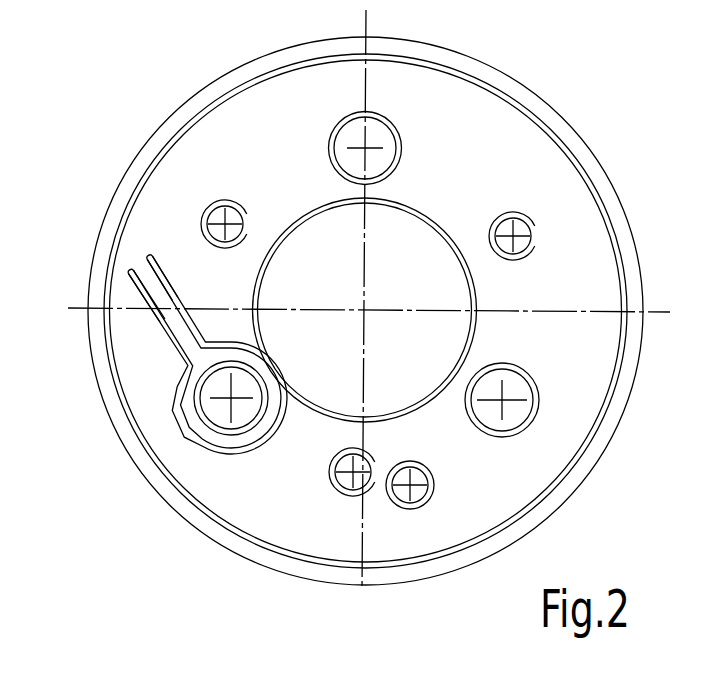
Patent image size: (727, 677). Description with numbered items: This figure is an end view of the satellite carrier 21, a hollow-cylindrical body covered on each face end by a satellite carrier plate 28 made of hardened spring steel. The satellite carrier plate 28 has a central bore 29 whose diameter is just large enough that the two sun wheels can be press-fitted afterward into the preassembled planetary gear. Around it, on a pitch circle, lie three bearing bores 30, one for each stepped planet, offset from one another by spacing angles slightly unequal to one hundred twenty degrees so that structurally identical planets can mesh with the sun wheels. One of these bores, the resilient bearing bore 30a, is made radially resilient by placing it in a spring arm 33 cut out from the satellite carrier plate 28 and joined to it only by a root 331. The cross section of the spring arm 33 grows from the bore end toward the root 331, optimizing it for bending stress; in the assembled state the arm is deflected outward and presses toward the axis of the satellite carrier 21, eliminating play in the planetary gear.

The satellite carrier 21 is at (605, 187).
The satellite carrier plate 28 is at (567, 278).
The central bore 29 is at (443, 327).
The bearing bore 30 is at (382, 132).
The resilient bearing bore 30a is at (218, 420).
The spring arm 33 is at (153, 285).
The root 331 is at (135, 262).